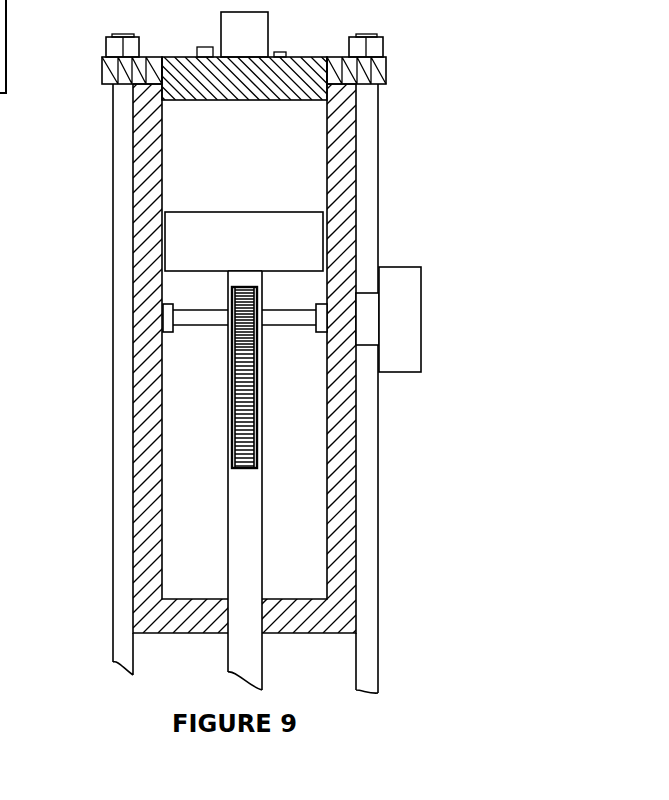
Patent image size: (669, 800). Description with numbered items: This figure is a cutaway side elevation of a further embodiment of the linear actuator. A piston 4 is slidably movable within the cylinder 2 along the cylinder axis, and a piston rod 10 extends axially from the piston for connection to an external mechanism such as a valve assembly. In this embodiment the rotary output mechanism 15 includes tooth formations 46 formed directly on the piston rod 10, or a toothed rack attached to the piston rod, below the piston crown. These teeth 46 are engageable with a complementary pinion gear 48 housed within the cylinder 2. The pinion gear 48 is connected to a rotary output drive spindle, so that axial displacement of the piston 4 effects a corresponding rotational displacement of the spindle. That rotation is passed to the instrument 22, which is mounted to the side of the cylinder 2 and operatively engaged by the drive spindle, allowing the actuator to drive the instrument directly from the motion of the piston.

The cylinder 2 is at (348, 547).
The piston 4 is at (177, 242).
The piston rod 10 is at (238, 515).
The rotary output mechanism 15 is at (277, 349).
The instrument 22 is at (412, 278).
The tooth formations 46 is at (245, 427).
The pinion gear 48 is at (237, 318).